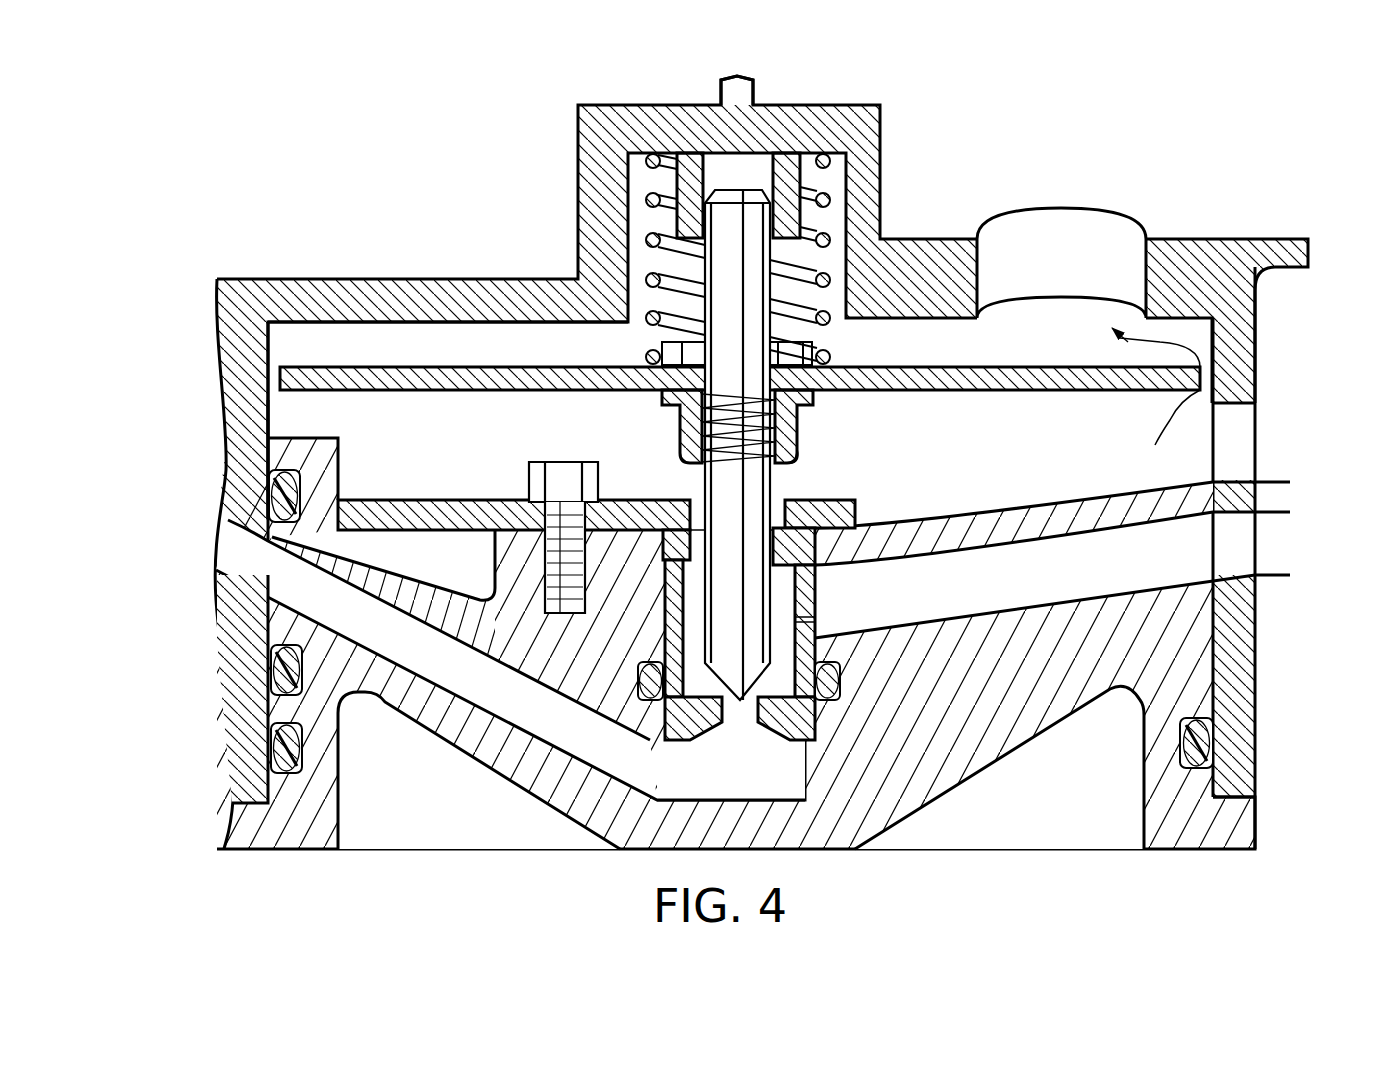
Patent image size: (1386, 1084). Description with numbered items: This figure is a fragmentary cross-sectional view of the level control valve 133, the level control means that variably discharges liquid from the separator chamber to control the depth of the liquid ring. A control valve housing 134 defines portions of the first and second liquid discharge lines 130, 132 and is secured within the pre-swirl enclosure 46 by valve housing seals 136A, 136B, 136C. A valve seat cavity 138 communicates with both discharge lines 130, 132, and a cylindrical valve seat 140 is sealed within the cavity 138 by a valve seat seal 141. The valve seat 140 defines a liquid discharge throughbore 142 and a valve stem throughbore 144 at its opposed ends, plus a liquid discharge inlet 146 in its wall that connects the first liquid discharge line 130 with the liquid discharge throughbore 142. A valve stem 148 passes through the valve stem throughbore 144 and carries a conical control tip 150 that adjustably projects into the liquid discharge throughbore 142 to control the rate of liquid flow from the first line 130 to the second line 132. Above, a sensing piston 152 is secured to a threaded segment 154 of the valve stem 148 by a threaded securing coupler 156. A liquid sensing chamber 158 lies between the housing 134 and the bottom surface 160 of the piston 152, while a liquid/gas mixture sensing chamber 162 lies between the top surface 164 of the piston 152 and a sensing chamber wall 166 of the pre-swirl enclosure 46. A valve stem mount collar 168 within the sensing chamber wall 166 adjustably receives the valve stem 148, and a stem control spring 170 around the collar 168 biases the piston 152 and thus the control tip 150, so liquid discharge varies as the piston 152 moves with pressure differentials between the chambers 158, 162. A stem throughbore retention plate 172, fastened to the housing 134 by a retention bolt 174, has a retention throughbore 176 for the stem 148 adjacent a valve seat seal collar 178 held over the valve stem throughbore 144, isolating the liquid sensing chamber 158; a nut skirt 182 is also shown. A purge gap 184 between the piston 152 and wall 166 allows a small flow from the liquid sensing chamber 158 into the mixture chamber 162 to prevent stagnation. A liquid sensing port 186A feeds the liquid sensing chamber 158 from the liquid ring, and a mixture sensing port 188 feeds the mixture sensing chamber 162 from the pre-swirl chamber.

The pre-swirl enclosure 46 is at (1212, 255).
The first liquid discharge line 130 is at (1268, 548).
The second liquid discharge line 132 is at (515, 688).
The level control valve 133 is at (1012, 160).
The control valve housing 134 is at (1240, 832).
The valve housing seal 136A is at (1200, 745).
The valve housing seal 136B is at (274, 668).
The O-ring seal 136C is at (272, 494).
The valve seat cavity 138 is at (752, 778).
The cylindrical valve seat 140 is at (785, 722).
The valve seat seal 141 is at (855, 650).
The liquid discharge throughbore 142 is at (740, 766).
The valve stem throughbore 144 is at (818, 546).
The liquid discharge inlet 146 is at (822, 614).
The valve stem 148 is at (745, 500).
The conical control tip 150 is at (725, 676).
The sensing piston 152 is at (962, 372).
The threaded segment 154 is at (690, 432).
The threaded securing coupler 156 is at (790, 432).
The liquid sensing chamber 158 is at (372, 412).
The bottom surface 160 is at (1092, 391).
The liquid/gas mixture sensing chamber 162 is at (460, 345).
The top surface 164 is at (568, 367).
The sensing chamber wall 166 is at (418, 326).
The valve stem mount collar 168 is at (790, 178).
The stem control spring 170 is at (828, 240).
The stem throughbore retention plate 172 is at (414, 500).
The retention bolt 174 is at (565, 462).
The retention throughbore 176 is at (698, 495).
The valve seat seal collar 178 is at (618, 500).
The nut skirt 182 is at (800, 452).
The purge gap 184 is at (272, 402).
The liquid sensing port 186A is at (1232, 440).
The mixture sensing port 188 is at (1080, 238).